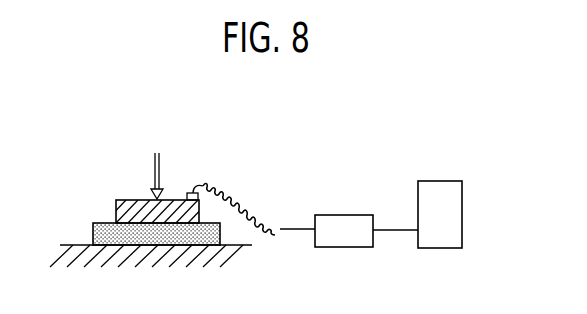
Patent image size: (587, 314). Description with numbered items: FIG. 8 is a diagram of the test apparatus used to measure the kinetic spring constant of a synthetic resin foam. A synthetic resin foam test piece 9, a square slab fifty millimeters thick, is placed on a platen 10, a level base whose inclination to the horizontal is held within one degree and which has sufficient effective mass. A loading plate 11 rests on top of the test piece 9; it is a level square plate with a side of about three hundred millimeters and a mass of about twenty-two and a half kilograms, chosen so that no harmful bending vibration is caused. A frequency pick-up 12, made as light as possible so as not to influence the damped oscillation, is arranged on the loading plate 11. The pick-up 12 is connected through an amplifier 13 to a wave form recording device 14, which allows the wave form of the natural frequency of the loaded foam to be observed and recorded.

The synthetic resin foam test piece 9 is at (101, 223).
The platen 10 is at (76, 245).
The loading plate 11 is at (128, 200).
The frequency pick-up 12 is at (188, 193).
The amplifier 13 is at (343, 215).
The wave form recording device 14 is at (433, 181).